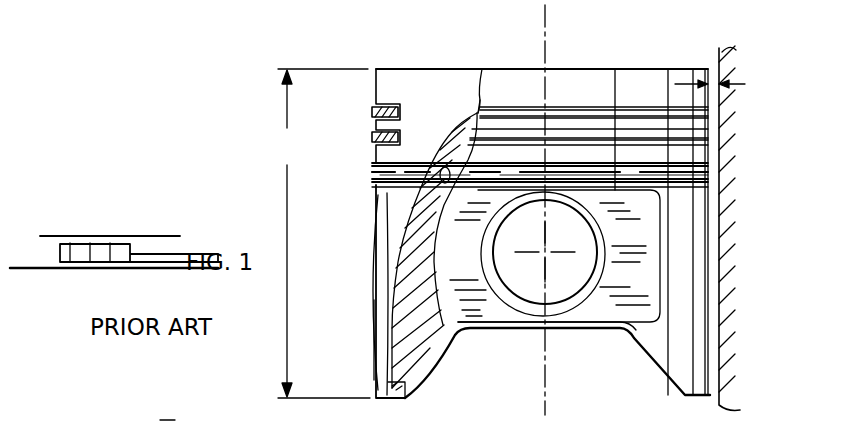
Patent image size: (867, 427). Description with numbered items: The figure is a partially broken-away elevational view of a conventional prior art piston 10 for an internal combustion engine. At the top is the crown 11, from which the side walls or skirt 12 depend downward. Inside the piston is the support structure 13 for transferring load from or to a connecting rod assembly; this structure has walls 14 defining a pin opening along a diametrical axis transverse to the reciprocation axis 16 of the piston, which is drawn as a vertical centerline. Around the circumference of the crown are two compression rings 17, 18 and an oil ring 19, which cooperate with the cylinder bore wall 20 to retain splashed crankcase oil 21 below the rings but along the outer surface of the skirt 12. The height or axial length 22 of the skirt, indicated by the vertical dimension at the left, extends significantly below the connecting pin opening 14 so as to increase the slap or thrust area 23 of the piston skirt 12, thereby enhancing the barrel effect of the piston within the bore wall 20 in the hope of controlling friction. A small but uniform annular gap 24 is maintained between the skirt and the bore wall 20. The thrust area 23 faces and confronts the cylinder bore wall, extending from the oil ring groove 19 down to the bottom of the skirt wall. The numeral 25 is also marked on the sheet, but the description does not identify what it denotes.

The piston 10 is at (422, 52).
The crown 11 is at (452, 80).
The side walls 12 is at (372, 234).
The support structure 13 is at (484, 290).
The walls 14 is at (556, 300).
The reciprocation axis 16 is at (545, 30).
The compression ring 17 is at (372, 112).
The compression ring 18 is at (372, 138).
The oil ring 19 is at (372, 174).
The bore wall 20 is at (730, 112).
The splashed crankcase oil 21 is at (726, 238).
The height or axial length 22 is at (322, 233).
The slap or thrust area 23 is at (372, 338).
The annular gap 24 is at (745, 84).
The cylinder block 25 is at (156, 421).